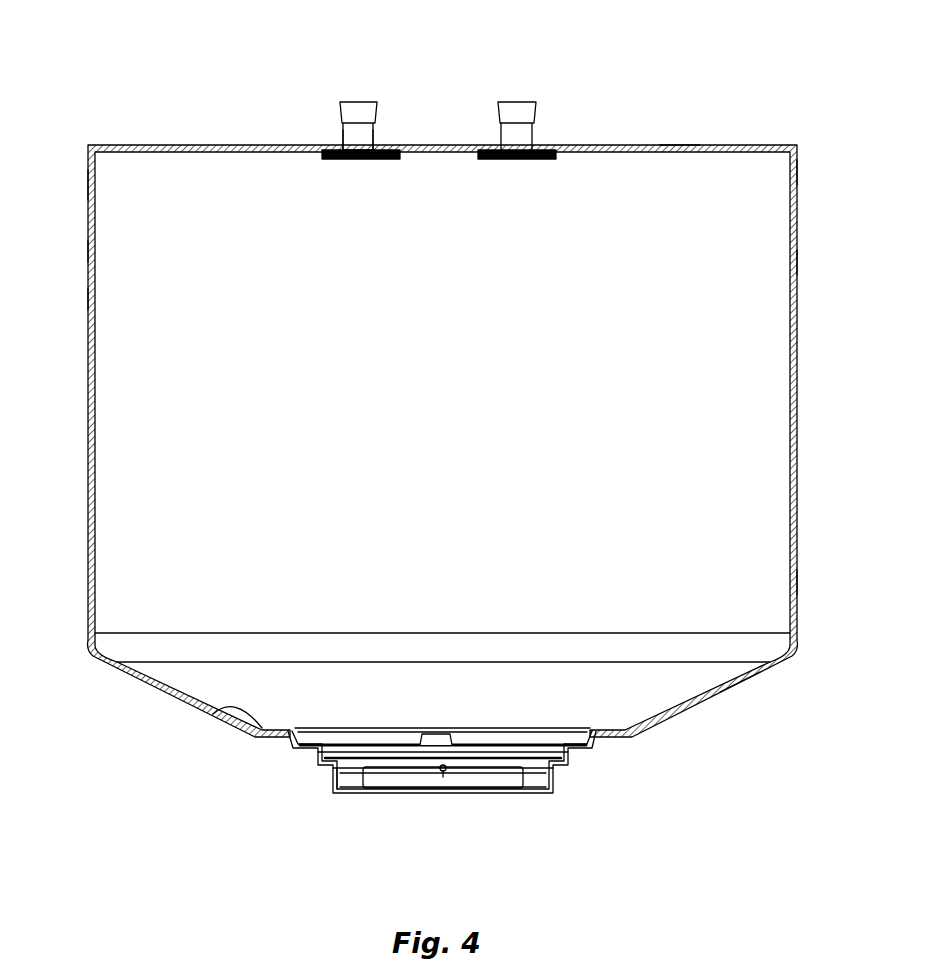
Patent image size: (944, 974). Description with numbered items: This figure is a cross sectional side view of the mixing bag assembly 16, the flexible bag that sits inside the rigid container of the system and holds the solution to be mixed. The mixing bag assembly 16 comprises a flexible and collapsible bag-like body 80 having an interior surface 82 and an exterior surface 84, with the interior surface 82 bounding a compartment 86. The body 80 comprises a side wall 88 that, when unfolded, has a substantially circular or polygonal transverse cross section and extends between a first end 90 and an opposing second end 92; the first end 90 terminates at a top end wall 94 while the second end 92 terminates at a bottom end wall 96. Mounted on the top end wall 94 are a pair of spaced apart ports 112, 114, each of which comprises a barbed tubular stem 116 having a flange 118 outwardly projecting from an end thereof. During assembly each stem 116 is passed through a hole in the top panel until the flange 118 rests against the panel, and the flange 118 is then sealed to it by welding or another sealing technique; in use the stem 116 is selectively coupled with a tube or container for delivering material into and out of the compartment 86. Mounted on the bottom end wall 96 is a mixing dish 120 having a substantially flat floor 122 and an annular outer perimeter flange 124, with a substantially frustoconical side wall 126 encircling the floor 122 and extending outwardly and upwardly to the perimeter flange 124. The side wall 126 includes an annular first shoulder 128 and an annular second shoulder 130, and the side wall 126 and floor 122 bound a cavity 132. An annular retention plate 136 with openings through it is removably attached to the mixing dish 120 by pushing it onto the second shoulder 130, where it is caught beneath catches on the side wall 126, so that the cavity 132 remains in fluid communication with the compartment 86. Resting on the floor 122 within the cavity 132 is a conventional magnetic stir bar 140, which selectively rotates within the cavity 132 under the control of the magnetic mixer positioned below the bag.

The mixing bag assembly 16 is at (735, 70).
The bag-like body 80 is at (776, 348).
The interior surface 82 is at (98, 184).
The exterior surface 84 is at (90, 250).
The compartment 86 is at (108, 298).
The side wall 88 is at (791, 266).
The first end 90 is at (798, 172).
The second end 92 is at (797, 578).
The top end wall 94 is at (680, 145).
The bottom end wall 96 is at (740, 690).
The port 112 is at (365, 100).
The port 114 is at (525, 100).
The barbed tubular stem 116 is at (343, 134).
The flange 118 is at (321, 160).
The mixing dish 120 is at (560, 780).
The floor 122 is at (424, 792).
The perimeter flange 124 is at (215, 712).
The side wall 126 is at (567, 765).
The first shoulder 128 is at (320, 772).
The second shoulder 130 is at (296, 752).
The cavity 132 is at (345, 778).
The retention plate 136 is at (470, 726).
The magnetic stir bar 140 is at (500, 777).